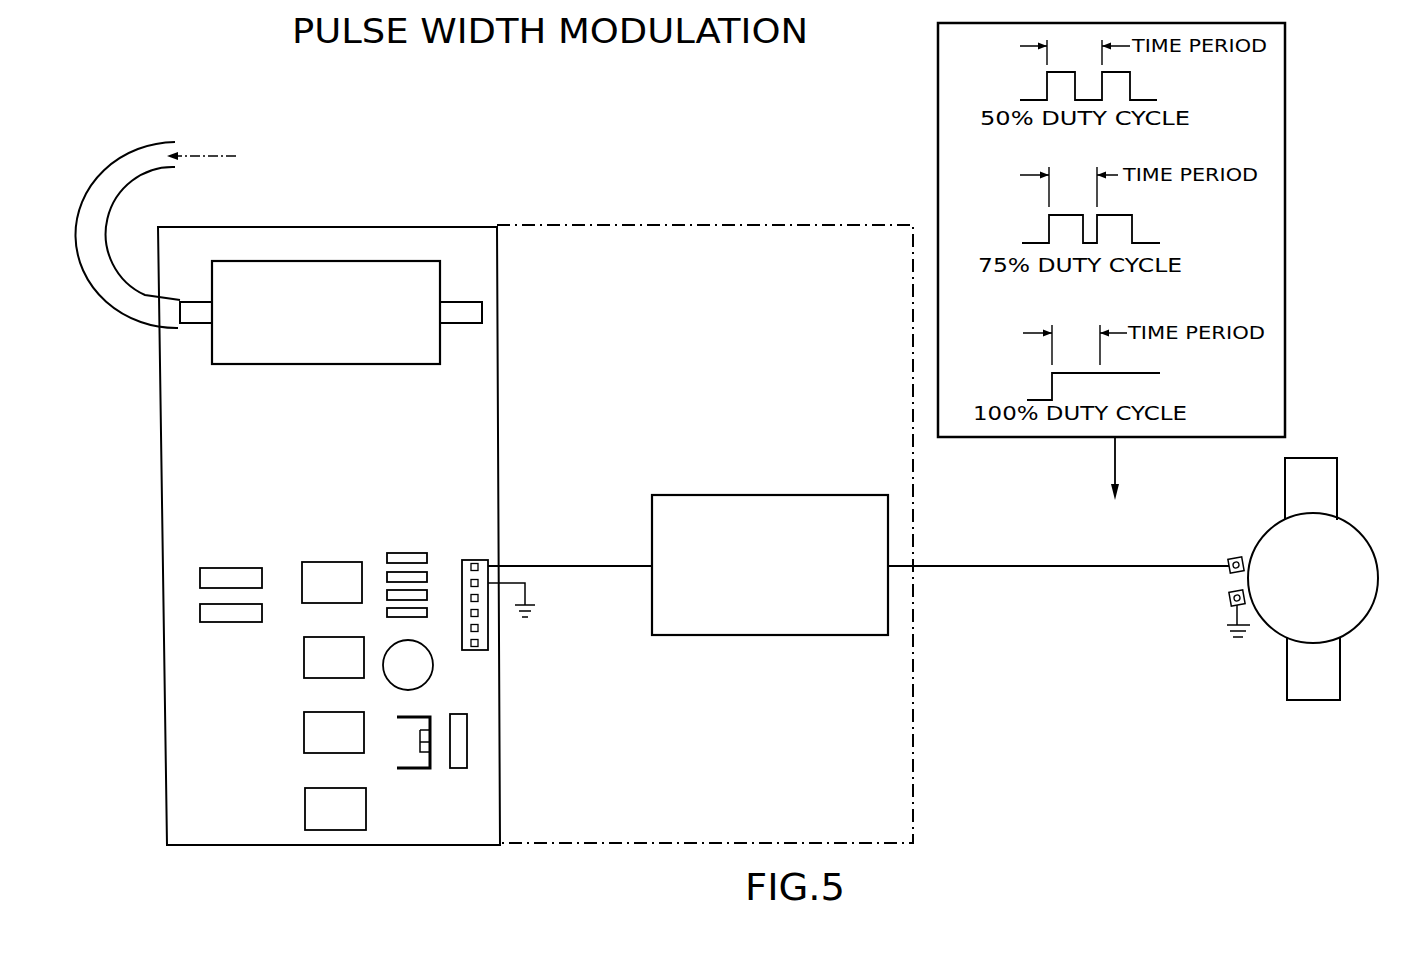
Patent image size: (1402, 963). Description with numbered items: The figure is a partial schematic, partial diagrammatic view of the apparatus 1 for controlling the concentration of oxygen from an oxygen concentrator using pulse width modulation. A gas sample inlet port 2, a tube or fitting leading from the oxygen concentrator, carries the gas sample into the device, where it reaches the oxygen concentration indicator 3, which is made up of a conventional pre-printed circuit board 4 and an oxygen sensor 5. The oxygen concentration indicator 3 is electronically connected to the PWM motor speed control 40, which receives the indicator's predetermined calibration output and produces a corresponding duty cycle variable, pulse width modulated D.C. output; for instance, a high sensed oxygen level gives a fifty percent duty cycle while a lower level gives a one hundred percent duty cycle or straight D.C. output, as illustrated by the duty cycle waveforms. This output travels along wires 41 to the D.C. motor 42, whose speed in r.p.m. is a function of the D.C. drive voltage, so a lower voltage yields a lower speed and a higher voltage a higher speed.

The apparatus for controlling the concentration of oxygen 1 is at (690, 226).
The gas sample inlet port 2 is at (138, 178).
The oxygen concentration indicator 3 is at (497, 432).
The pre-printed circuit board 4 is at (450, 412).
The oxygen sensor 5 is at (425, 303).
The PWM motor speed control 40 is at (774, 636).
The wires 41 is at (1138, 566).
The D.C. motor 42 is at (1273, 637).